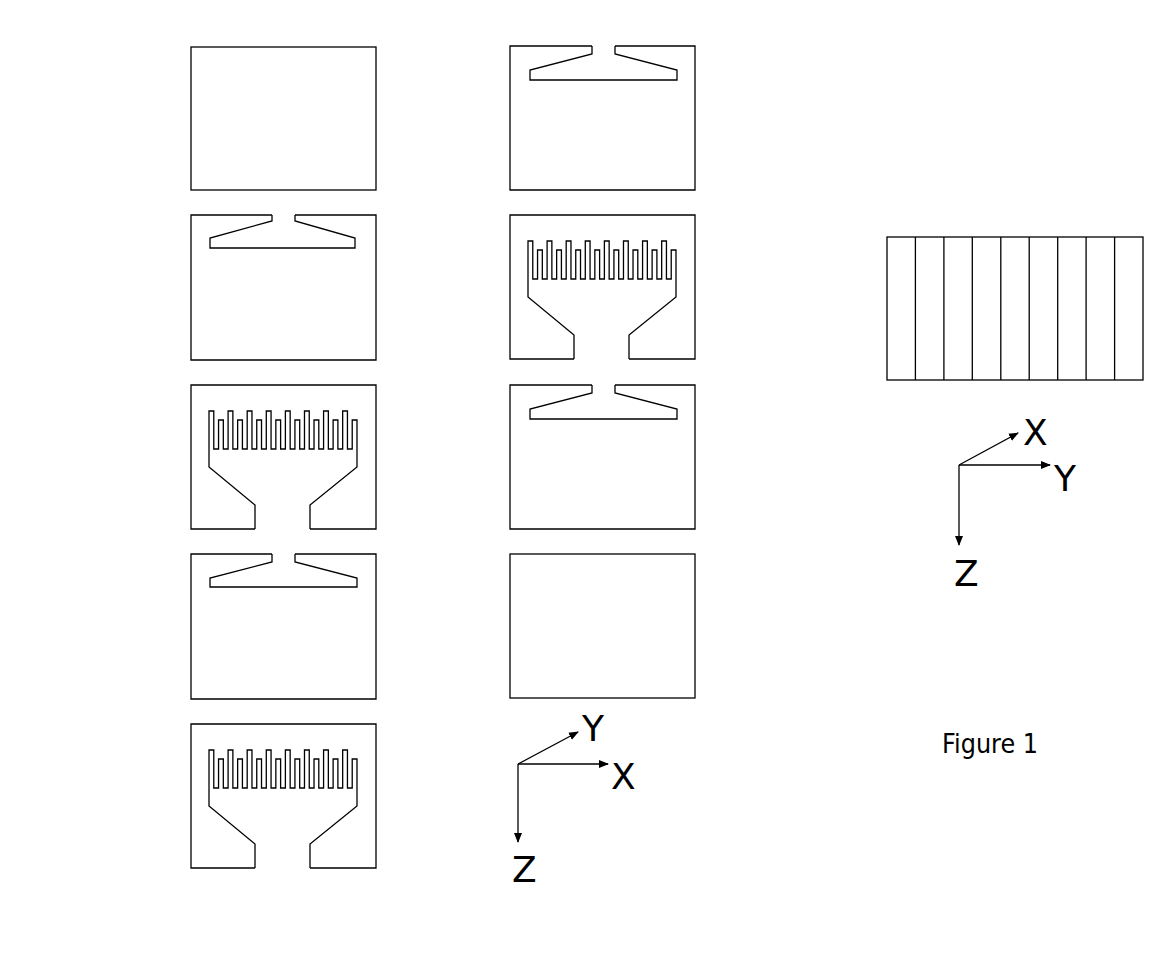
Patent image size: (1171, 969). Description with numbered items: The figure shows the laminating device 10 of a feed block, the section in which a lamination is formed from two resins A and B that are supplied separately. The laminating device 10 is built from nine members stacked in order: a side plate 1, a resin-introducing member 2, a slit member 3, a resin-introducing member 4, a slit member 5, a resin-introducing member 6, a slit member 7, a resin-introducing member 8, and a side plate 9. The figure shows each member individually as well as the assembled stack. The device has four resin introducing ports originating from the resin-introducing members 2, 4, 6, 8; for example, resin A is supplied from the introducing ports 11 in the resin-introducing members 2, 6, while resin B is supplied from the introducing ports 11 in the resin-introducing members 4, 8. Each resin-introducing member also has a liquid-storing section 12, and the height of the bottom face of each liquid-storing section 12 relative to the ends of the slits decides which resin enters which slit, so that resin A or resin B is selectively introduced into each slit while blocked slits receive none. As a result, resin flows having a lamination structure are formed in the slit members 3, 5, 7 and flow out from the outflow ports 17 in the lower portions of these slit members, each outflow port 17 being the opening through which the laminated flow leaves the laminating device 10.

The side plate 1 is at (262, 118).
The resin-introducing member 2 is at (262, 287).
The slit member 3 is at (262, 457).
The resin-introducing member 4 is at (262, 626).
The slit member 5 is at (262, 796).
The resin-introducing member 6 is at (586, 118).
The slit member 7 is at (586, 287).
The resin-introducing member 8 is at (586, 457).
The side plate 9 is at (586, 626).
The laminating device 10 is at (895, 177).
The introducing port 11 is at (282, 222).
The liquid-storing section 12 is at (280, 238).
The outflow port 17 is at (283, 516).